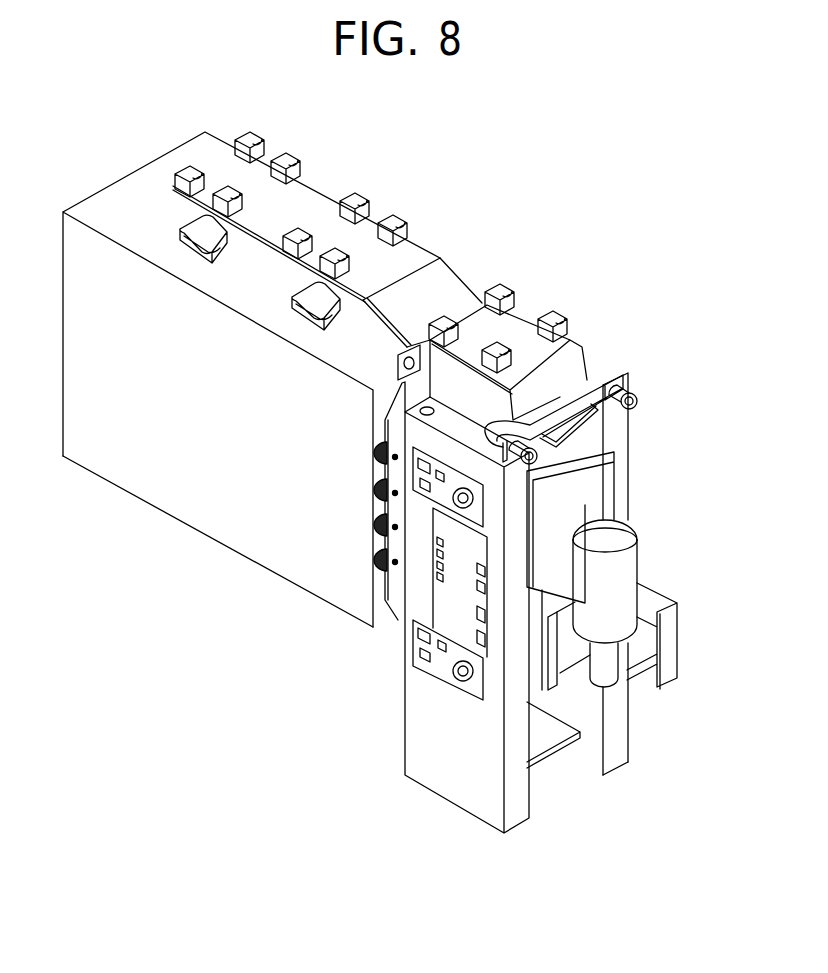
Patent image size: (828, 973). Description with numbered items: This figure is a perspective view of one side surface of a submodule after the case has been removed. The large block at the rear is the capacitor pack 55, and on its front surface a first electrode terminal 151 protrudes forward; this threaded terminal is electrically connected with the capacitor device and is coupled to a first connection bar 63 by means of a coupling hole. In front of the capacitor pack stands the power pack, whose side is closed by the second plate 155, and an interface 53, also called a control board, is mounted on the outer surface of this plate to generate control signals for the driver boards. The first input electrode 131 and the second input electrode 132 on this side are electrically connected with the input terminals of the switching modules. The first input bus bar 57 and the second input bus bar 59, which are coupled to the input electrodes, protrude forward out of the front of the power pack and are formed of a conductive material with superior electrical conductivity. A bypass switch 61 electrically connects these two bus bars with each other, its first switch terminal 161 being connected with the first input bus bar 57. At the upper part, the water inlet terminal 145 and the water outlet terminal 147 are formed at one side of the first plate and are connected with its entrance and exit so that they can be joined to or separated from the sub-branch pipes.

The capacitor pack 55 is at (222, 515).
The first electrode terminal 151 is at (374, 560).
The interface 53 is at (400, 588).
The first connection bar 63 is at (374, 623).
The first input electrode 131 is at (482, 638).
The second input electrode 132 is at (453, 670).
The second plate 155 is at (425, 727).
The water inlet terminal 145 is at (562, 466).
The water outlet terminal 147 is at (638, 400).
The first switch terminal 161 is at (633, 527).
The first input bus bar 57 is at (600, 548).
The bypass switch 61 is at (628, 575).
The second input bus bar 59 is at (674, 650).